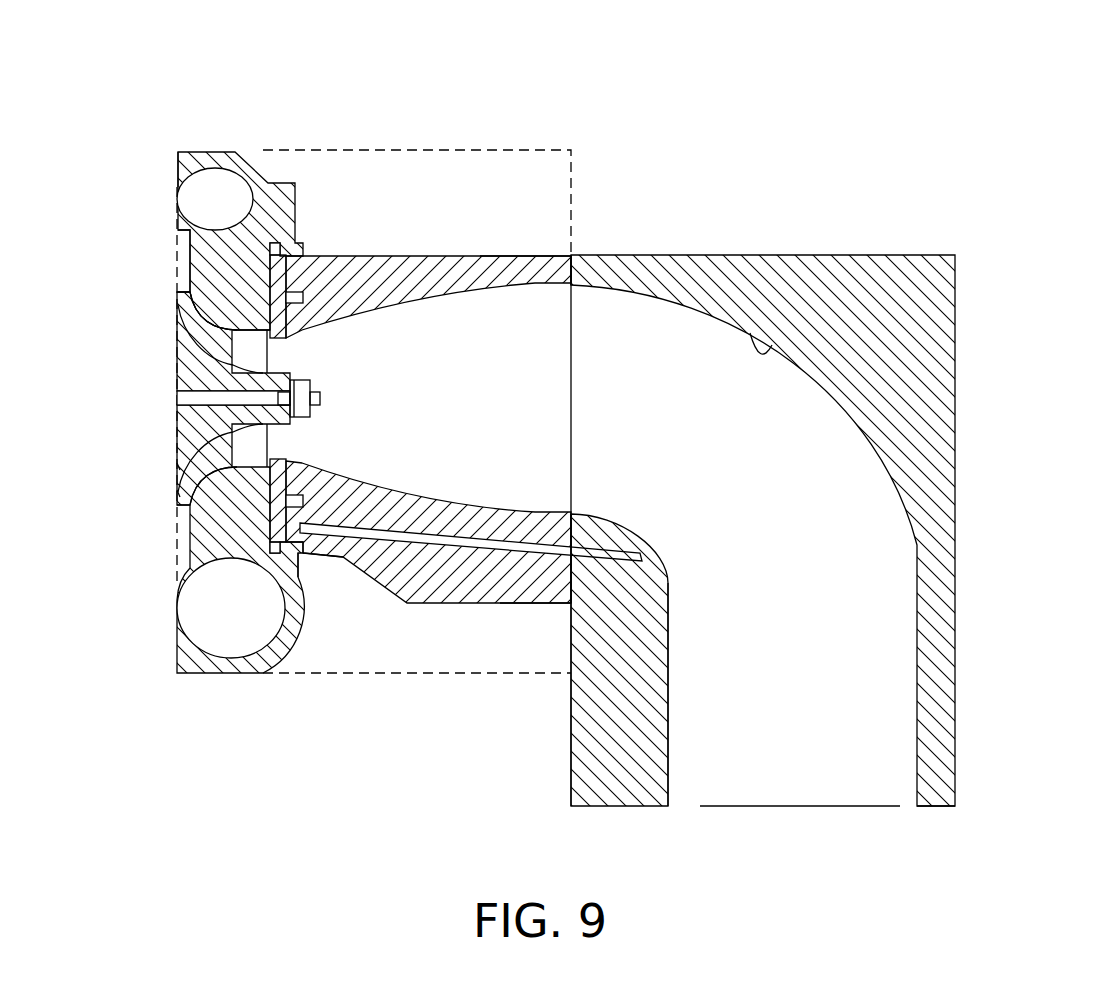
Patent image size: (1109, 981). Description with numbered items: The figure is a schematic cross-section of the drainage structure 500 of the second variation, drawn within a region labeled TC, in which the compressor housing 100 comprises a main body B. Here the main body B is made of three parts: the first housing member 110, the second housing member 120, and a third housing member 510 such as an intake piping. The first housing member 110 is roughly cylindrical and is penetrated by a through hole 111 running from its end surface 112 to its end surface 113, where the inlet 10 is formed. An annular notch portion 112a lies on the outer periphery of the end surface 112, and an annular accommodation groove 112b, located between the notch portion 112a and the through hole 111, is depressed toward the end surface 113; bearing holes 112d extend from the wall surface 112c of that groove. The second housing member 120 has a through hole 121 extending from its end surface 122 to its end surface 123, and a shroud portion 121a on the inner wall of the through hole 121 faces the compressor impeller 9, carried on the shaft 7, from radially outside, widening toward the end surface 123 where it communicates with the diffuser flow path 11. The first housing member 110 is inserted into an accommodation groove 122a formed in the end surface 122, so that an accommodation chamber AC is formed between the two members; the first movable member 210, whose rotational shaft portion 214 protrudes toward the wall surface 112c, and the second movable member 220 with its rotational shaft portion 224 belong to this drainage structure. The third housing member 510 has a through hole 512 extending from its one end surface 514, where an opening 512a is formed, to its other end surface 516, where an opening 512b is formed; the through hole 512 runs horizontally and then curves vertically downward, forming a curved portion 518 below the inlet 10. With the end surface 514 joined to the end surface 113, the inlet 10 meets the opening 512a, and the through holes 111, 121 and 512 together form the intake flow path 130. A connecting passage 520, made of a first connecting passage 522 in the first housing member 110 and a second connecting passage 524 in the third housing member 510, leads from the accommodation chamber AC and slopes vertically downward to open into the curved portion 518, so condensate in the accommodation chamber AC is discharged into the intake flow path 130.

The turbocharger TC is at (92, 120).
The drainage structure 500 is at (545, 50).
The second housing member 120 is at (268, 180).
The end surface 123 is at (178, 162).
The accommodation chamber AC is at (184, 240).
The diffuser flow path 11 is at (190, 252).
The compressor impeller 9 is at (186, 300).
The through hole 121 is at (228, 352).
The shroud portion 121a is at (222, 332).
The shaft 7 is at (186, 400).
The end surface 122 is at (296, 200).
The accommodation groove 122a is at (300, 570).
The first movable member 210 is at (345, 322).
The rotational shaft portion 214 is at (303, 298).
The first housing member 110 is at (500, 256).
The compressor housing 100 is at (538, 256).
The through hole 111 is at (572, 288).
The end surface 112 is at (305, 560).
The notch portion 112a is at (300, 547).
The accommodation groove 112b is at (190, 525).
The wall surface 112c is at (178, 463).
The bearing holes 112d is at (178, 495).
The second movable member 220 is at (383, 540).
The rotational shaft portion 224 is at (338, 530).
The first connecting passage 522 is at (438, 548).
The connecting passage 520 is at (571, 585).
The one end surface 514 is at (555, 603).
The intake flow path 130 is at (436, 446).
The third housing member 510 is at (762, 256).
The through hole 512 is at (772, 345).
The opening 512a is at (571, 432).
The opening 512b is at (790, 808).
The main body B is at (713, 255).
The end surface 113 is at (571, 573).
The inlet 10 is at (572, 467).
The second connecting passage 524 is at (640, 562).
The curved portion 518 is at (668, 583).
The other end surface 516 is at (937, 808).